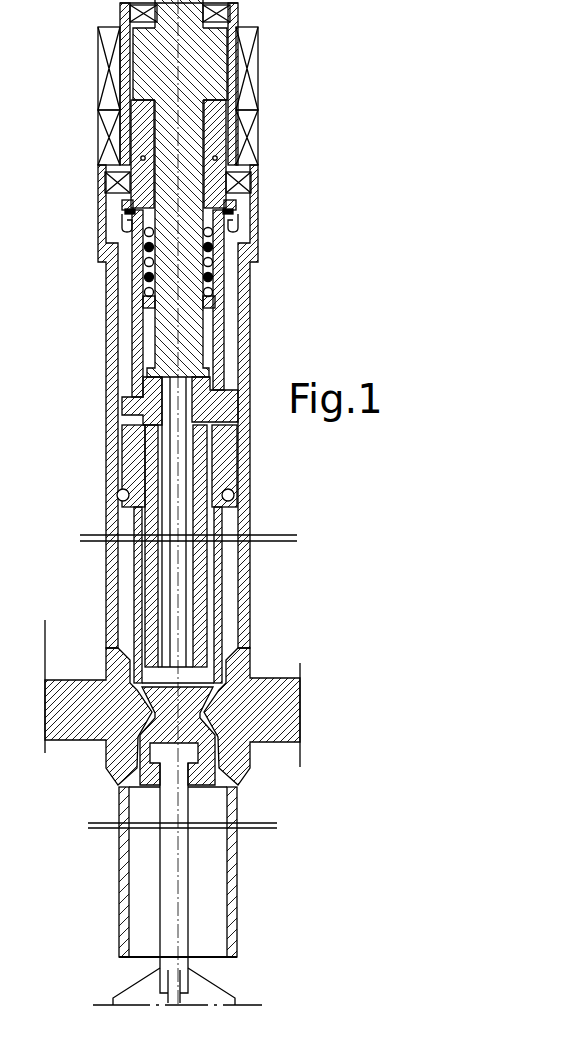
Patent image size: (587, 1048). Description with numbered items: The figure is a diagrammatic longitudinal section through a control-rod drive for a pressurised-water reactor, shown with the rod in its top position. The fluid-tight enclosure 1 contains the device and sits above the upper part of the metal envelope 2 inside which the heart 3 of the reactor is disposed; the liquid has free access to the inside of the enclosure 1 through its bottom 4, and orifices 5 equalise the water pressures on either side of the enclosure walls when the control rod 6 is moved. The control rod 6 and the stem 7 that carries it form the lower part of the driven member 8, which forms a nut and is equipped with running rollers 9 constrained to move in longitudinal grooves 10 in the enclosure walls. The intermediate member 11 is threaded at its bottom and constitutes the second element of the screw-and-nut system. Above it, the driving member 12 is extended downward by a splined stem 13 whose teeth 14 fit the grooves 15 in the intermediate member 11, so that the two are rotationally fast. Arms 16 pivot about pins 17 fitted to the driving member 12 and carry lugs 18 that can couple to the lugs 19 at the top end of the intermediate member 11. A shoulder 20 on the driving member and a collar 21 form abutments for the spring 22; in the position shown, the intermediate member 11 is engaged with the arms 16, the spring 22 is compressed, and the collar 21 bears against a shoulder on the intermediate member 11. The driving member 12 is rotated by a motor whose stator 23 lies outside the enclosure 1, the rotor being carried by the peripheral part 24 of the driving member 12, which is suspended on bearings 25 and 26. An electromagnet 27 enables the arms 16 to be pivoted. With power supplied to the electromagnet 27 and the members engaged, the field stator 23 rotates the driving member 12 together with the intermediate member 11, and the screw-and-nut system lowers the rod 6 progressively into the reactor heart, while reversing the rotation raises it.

The enclosure 1 is at (245, 562).
The metal envelope 2 is at (270, 694).
The heart of the reactor 3 is at (271, 1035).
The bottom 4 is at (208, 957).
The orifices 5 is at (228, 803).
The control rod 6 is at (133, 992).
The stem 7 is at (180, 883).
The driven member 8 is at (140, 585).
The running rollers 9 is at (117, 497).
The longitudinal grooves 10 is at (120, 452).
The intermediate member 11 is at (137, 401).
The driving member 12 is at (195, 143).
The splined stem 13 is at (190, 395).
The teeth 14 is at (180, 447).
The grooves 15 is at (235, 490).
The arms 16 is at (105, 187).
The pins 17 is at (107, 167).
The lugs 18 is at (122, 227).
The lugs 19 is at (120, 210).
The shoulder 20 is at (236, 223).
The collar 21 is at (217, 305).
The spring 22 is at (227, 248).
The stator 23 is at (107, 98).
The peripheral part 24 is at (210, 73).
The bearing 25 is at (232, 16).
The bearing 26 is at (245, 183).
The electromagnet 27 is at (102, 143).